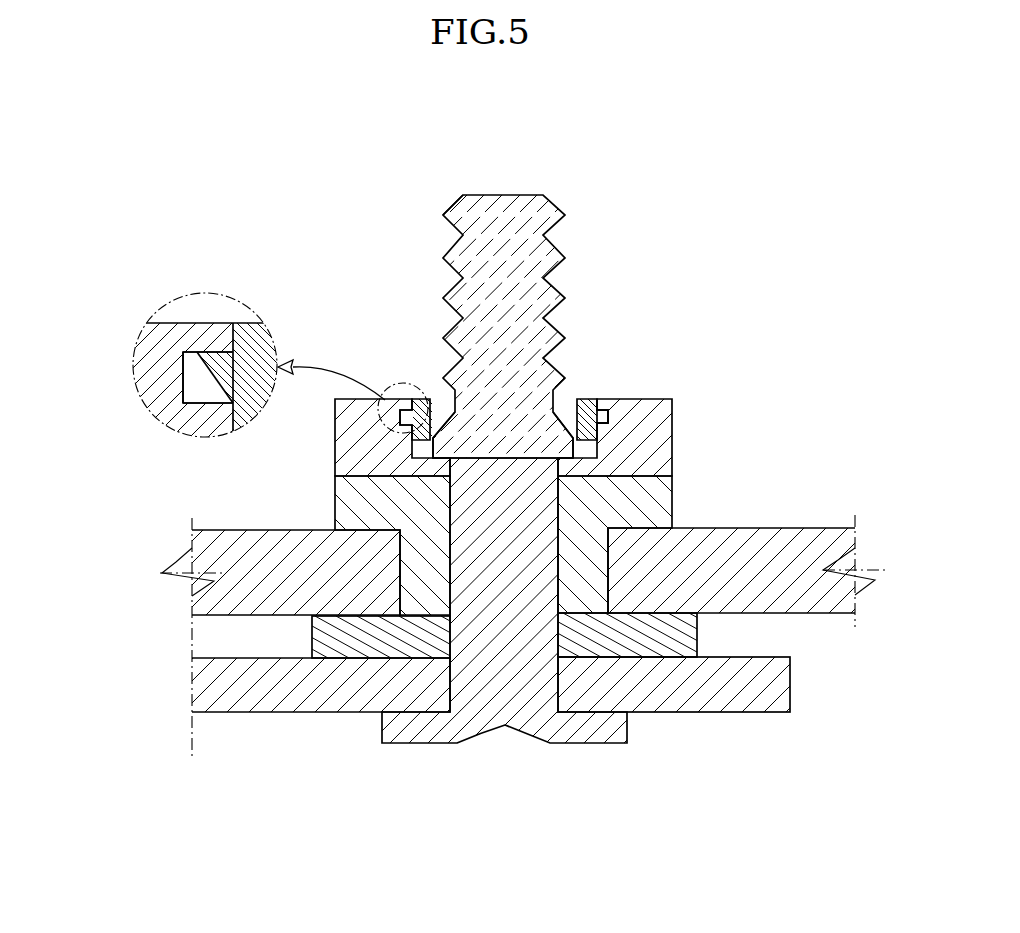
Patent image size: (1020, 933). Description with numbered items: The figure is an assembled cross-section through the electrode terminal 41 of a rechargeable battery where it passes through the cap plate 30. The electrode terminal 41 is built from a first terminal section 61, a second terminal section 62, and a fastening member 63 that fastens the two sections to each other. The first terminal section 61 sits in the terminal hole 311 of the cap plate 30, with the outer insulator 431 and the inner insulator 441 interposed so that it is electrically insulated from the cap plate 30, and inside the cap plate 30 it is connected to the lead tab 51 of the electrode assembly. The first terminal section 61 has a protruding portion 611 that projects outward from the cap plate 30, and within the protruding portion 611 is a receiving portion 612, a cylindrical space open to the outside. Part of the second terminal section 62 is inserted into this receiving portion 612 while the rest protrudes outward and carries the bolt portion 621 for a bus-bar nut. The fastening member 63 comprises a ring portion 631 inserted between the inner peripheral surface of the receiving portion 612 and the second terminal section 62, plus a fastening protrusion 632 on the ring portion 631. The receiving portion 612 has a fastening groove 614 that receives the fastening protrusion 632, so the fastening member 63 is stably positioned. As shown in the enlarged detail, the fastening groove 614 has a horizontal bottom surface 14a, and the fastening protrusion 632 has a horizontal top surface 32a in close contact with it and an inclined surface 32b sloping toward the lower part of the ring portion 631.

The electrode terminal 41 is at (510, 282).
The second terminal section 62 is at (510, 326).
The bolt portion 621 is at (443, 217).
The receiving portion 612 is at (483, 457).
The fastening member 63 is at (555, 369).
The ring portion 631 is at (596, 410).
The protruding portion 611 is at (653, 442).
The outer insulator 431 is at (658, 497).
The cap plate 30 is at (253, 590).
The terminal hole 311 is at (402, 570).
The first terminal section 61 is at (488, 713).
The inner insulator 441 is at (668, 645).
The lead tab 51 is at (745, 685).
The fastening groove 614 is at (190, 393).
The horizontal bottom surface 14a is at (182, 372).
The horizontal top surface 32a is at (210, 350).
The inclined surface 32b is at (217, 403).
The fastening protrusion 632 is at (208, 358).